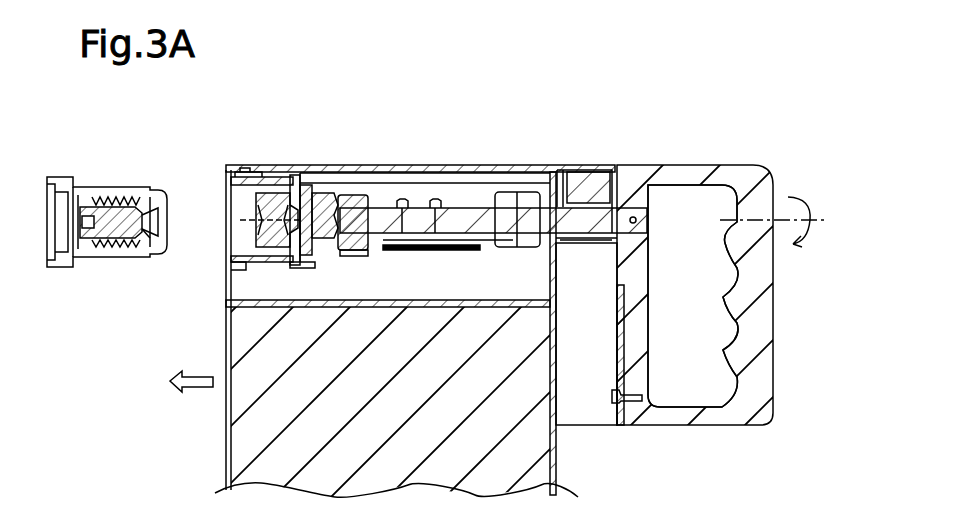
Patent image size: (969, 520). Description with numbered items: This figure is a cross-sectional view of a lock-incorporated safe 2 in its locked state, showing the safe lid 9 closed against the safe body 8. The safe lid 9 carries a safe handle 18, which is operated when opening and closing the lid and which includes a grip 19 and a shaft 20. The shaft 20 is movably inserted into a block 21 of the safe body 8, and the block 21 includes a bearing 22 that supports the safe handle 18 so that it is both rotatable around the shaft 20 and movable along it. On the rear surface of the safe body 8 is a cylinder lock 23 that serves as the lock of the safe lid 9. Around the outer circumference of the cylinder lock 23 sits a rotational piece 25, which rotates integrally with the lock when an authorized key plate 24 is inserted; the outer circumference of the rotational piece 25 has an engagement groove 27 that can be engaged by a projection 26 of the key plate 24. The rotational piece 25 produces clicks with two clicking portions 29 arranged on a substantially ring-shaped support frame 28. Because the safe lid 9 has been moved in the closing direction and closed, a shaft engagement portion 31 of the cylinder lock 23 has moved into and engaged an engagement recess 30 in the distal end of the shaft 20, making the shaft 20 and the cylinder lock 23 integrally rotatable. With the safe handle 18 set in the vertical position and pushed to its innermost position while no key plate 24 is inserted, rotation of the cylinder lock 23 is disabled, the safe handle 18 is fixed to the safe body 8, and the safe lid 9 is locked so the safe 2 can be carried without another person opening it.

The safe 2 is at (226, 452).
The safe body 8 is at (558, 463).
The safe lid 9 is at (500, 165).
The safe handle 18 is at (647, 166).
The grip 19 is at (670, 173).
The shaft 20 is at (543, 208).
The block 21 is at (592, 202).
The bearing 22 is at (640, 220).
The cylinder lock 23 is at (256, 205).
The key plate 24 is at (140, 205).
The rotational piece 25 is at (246, 175).
The projection 26 is at (140, 241).
The engagement groove 27 is at (285, 175).
The support frame 28 is at (325, 193).
The clicking portions 29 is at (302, 183).
The engagement recess 30 is at (345, 205).
The shaft engagement portion 31 is at (350, 252).